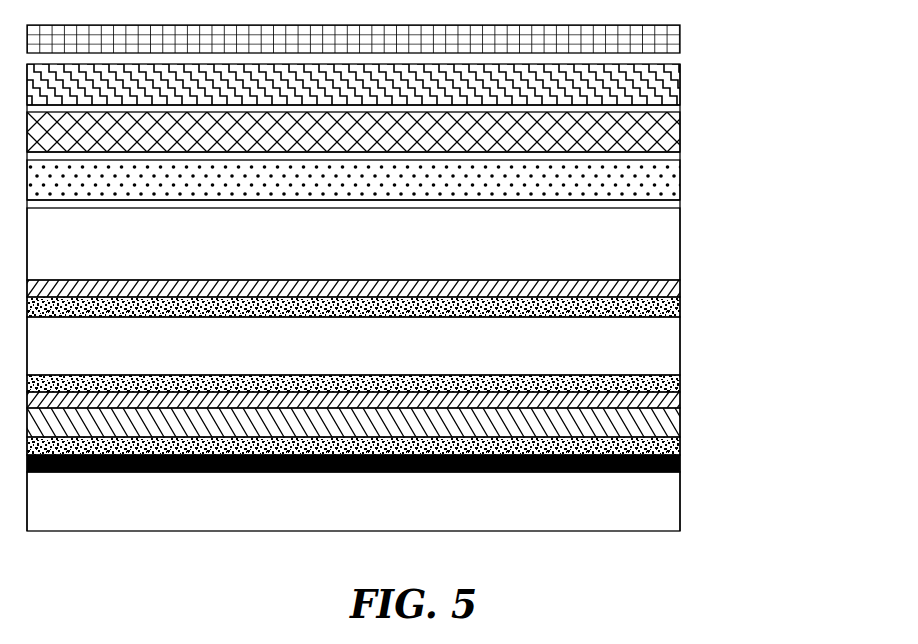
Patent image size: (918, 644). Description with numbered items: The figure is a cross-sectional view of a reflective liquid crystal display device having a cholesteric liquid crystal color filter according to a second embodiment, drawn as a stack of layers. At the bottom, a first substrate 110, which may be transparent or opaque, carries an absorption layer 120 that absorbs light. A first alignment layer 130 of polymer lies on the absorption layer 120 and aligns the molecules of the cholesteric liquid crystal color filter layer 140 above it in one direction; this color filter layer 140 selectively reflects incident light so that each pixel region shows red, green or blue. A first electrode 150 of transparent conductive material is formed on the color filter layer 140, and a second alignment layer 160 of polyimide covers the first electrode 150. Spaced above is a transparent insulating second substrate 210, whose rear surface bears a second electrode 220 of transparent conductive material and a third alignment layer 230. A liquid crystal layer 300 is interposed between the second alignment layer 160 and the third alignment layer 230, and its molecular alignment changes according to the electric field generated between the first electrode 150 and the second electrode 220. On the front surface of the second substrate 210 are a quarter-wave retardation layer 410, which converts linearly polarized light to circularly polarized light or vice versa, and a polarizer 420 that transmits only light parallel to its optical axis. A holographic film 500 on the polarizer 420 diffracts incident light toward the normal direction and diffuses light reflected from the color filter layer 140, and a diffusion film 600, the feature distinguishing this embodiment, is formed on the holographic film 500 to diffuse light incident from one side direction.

The diffusion film 600 is at (667, 38).
The holographic film 500 is at (667, 88).
The polarizer 420 is at (678, 136).
The retardation layer 410 is at (666, 178).
The second substrate 210 is at (664, 238).
The second electrode 220 is at (677, 289).
The third alignment layer 230 is at (680, 311).
The liquid crystal layer 300 is at (660, 343).
The second alignment layer 160 is at (680, 388).
The first electrode 150 is at (678, 402).
The cholesteric liquid crystal color filter layer 140 is at (678, 424).
The first alignment layer 130 is at (679, 445).
The absorption layer 120 is at (679, 463).
The first substrate 110 is at (672, 510).